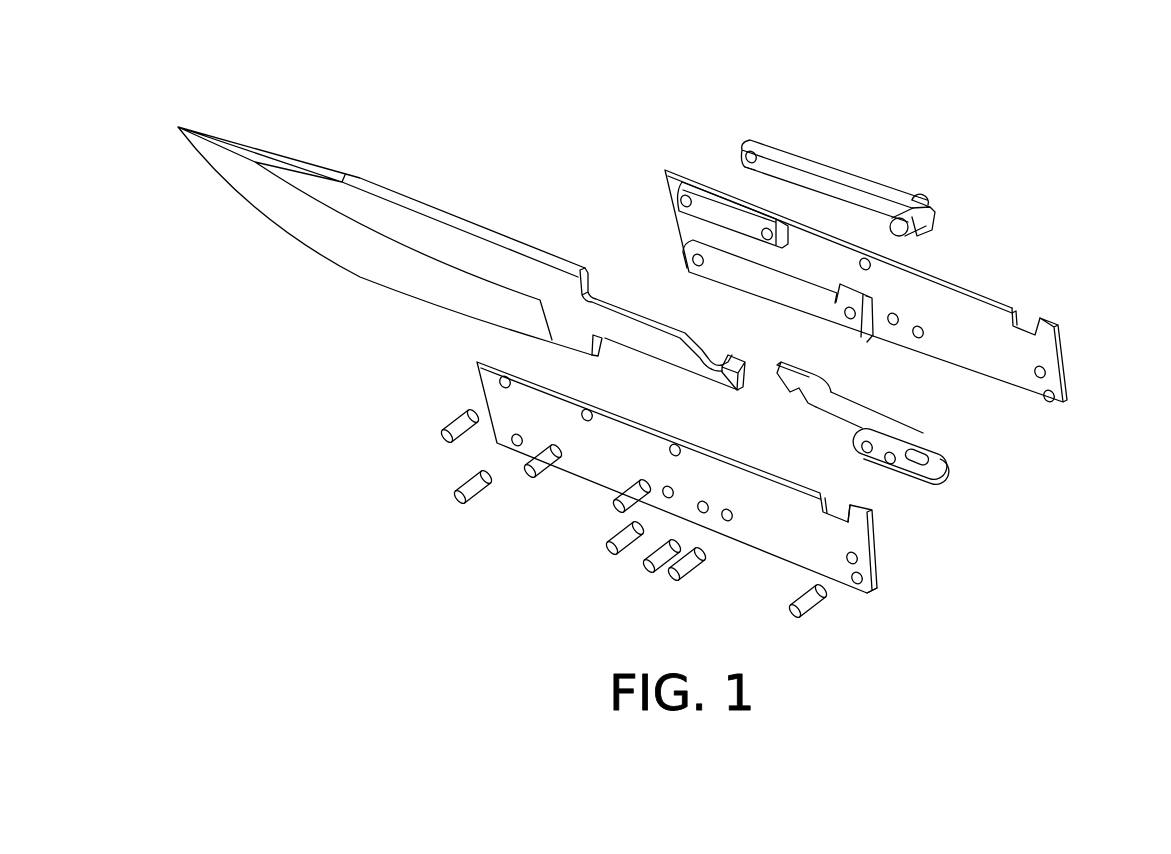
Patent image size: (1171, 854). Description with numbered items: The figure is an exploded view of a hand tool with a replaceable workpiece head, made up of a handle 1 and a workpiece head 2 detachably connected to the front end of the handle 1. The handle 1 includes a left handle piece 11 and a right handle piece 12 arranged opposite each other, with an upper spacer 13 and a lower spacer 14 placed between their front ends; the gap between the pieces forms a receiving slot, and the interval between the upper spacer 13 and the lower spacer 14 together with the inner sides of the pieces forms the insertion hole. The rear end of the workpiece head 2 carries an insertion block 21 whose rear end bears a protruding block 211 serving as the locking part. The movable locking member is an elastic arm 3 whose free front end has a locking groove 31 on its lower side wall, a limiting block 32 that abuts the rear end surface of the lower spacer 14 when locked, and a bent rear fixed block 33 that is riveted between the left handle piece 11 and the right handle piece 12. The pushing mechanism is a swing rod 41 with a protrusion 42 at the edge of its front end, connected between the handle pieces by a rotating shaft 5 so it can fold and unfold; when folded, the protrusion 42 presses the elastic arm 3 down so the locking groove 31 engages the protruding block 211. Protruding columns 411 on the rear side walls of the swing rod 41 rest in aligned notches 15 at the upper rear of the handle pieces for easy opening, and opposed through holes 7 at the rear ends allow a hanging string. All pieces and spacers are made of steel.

The handle 1 is at (877, 577).
The workpiece head 2 is at (442, 227).
The elastic arm 3 is at (922, 435).
The rotating shaft 5 is at (623, 492).
The through holes 7 is at (1053, 400).
The left handle piece 11 is at (795, 540).
The right handle piece 12 is at (1060, 342).
The upper spacer 13 is at (765, 227).
The lower spacer 14 is at (778, 293).
The notches 15 is at (1032, 317).
The insertion block 21 is at (618, 325).
The protruding block 211 is at (730, 360).
The locking groove 31 is at (805, 395).
The limiting block 32 is at (852, 428).
The fixed block 33 is at (878, 470).
The swing rod 41 is at (880, 198).
The protrusion 42 is at (748, 170).
The protruding column 411 is at (925, 198).